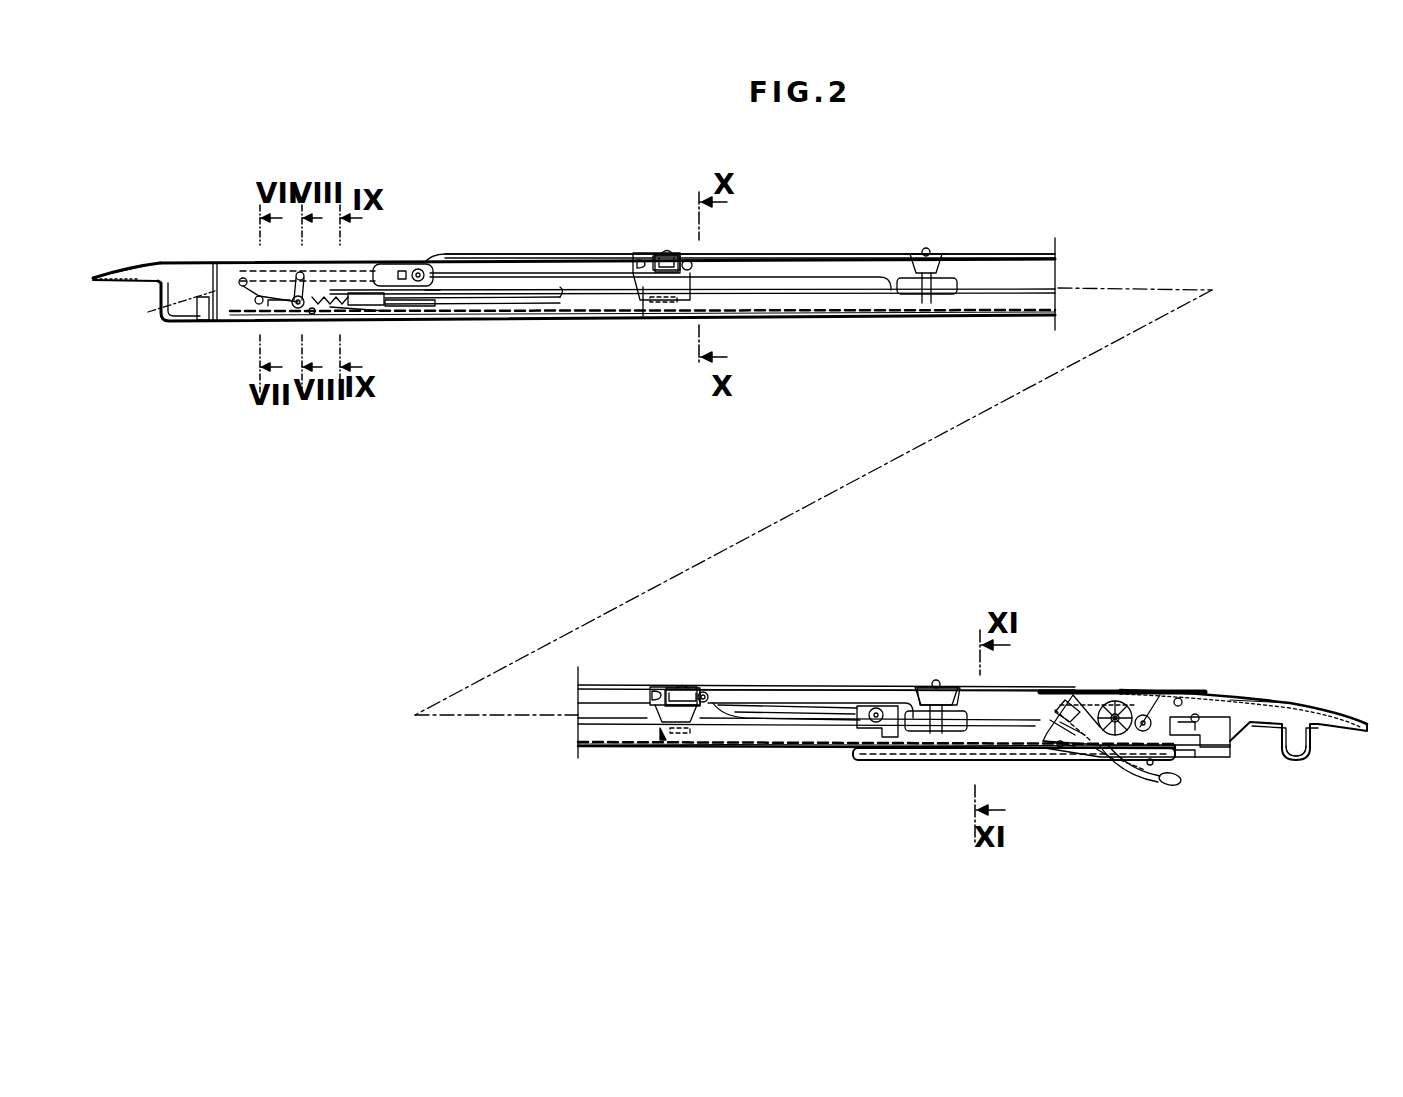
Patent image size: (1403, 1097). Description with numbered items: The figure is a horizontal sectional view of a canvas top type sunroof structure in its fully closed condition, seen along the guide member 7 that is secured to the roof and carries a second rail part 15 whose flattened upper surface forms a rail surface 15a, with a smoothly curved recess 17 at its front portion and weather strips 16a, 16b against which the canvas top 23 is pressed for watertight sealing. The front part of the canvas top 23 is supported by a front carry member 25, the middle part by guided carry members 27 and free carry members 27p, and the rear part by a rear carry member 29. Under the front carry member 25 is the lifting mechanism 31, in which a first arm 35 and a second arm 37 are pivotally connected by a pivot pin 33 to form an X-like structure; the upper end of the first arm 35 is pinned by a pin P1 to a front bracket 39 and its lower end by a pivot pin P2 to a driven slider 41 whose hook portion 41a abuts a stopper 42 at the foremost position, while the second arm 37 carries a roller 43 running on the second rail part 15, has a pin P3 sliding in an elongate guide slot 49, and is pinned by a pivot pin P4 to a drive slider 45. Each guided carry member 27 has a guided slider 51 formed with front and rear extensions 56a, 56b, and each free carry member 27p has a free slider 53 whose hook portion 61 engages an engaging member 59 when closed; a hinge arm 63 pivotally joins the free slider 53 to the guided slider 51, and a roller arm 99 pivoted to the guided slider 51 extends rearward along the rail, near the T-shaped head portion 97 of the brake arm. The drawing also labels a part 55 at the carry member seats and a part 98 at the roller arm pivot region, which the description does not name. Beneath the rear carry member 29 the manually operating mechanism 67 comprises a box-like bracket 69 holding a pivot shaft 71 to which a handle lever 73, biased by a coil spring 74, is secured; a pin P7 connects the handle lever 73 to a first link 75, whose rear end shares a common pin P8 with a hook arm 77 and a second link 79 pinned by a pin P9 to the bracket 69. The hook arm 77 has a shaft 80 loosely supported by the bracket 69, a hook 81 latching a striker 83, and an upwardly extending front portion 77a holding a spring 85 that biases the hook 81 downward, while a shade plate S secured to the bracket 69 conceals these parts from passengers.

The guide member 7 is at (777, 736).
The second rail part 15 is at (587, 312).
The rail surface 15a is at (561, 300).
The weather strip 16a is at (1360, 733).
The weather strip 16b is at (1292, 702).
The smoothly curved recess 17 is at (298, 310).
The canvas top 23 is at (596, 258).
The front carry member 25 is at (162, 265).
The guided carry member 27 is at (667, 254).
The free carry member 27p is at (931, 253).
The rear carry member 29 is at (1320, 710).
The lifting mechanism 31 is at (180, 323).
The pivot pin 33 is at (303, 273).
The first arm 35 is at (136, 308).
The second arm 37 is at (394, 268).
The front bracket 39 is at (213, 270).
The driven slider 41 is at (483, 312).
The hook portion 41a is at (435, 303).
The stopper 42 is at (370, 311).
The roller 43 is at (346, 305).
The drive slider 45 is at (270, 305).
The elongate guide slot 49 is at (420, 270).
The guided slider 51 is at (653, 276).
The free slider 53 is at (952, 258).
The clip seat 55 is at (690, 262).
The front extension 56a is at (645, 320).
The rear extension 56b is at (705, 298).
The engaging member 59 is at (910, 292).
The hook portion 61 is at (927, 300).
The hinge arm 63 is at (822, 255).
The manually operating mechanism 67 is at (1167, 788).
The box-like bracket 69 is at (1100, 705).
The pivot shaft 71 is at (1080, 748).
The handle lever 73 is at (1106, 750).
The coil spring 74 is at (1080, 722).
The first link 75 is at (1075, 703).
The hook arm 77 is at (1205, 748).
The front portion 77a is at (1136, 768).
The second link 79 is at (1182, 756).
The shaft 80 is at (1196, 714).
The hook 81 is at (1292, 756).
The striker 83 is at (1238, 745).
The spring 85 is at (1138, 710).
The T-shaped head portion 97 is at (1124, 705).
The lever pivot 98 is at (874, 708).
The roller arm 99 is at (820, 718).
The shade plate S is at (955, 760).
The pin P1 is at (243, 278).
The pivot pin P2 is at (316, 313).
The pin P3 is at (432, 290).
The pivot pin P4 is at (258, 304).
The pin P7 is at (1058, 748).
The common pin P8 is at (1151, 764).
The pin P9 is at (1178, 698).